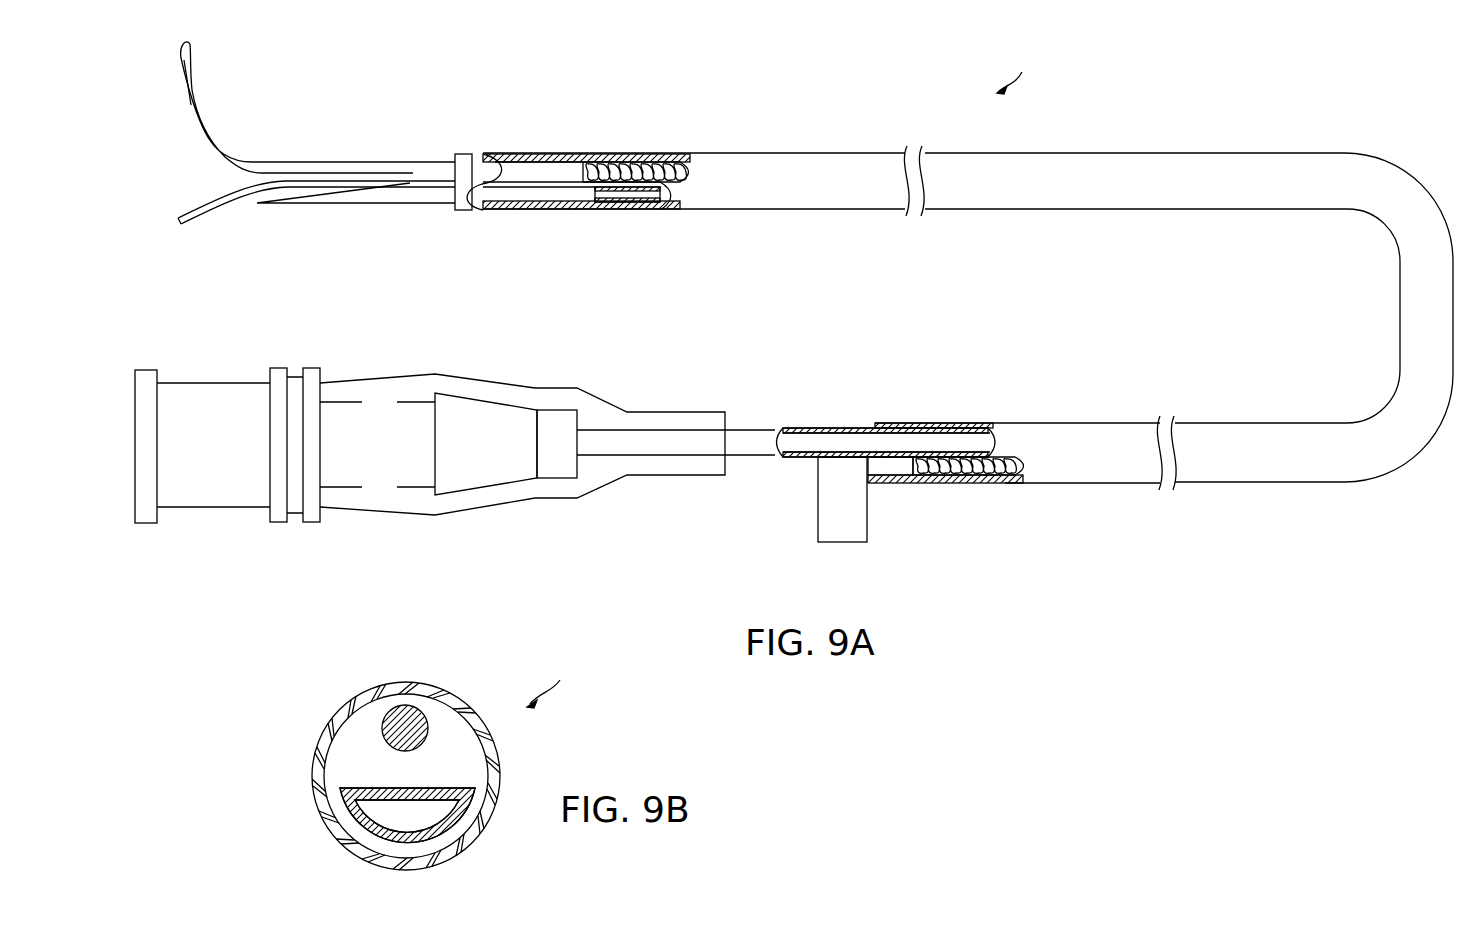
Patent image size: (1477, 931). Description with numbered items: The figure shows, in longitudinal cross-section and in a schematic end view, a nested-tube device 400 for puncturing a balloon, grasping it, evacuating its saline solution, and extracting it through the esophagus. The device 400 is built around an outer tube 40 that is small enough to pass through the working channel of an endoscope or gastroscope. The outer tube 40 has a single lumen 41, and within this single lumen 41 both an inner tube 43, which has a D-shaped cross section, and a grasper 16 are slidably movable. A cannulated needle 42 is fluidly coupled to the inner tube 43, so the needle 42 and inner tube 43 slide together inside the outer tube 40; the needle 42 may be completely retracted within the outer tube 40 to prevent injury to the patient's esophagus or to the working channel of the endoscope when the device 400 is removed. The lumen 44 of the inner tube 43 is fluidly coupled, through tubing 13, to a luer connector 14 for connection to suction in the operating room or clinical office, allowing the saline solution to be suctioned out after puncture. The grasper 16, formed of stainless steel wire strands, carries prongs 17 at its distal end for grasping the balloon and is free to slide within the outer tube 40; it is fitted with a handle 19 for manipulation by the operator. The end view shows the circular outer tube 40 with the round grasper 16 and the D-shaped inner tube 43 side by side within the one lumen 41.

In FIG. 9A, the tubing 13 is at (600, 488).
In FIG. 9A, the luer connector 14 is at (282, 523).
In FIG. 9A, the grasper 16 is at (340, 162).
In FIG. 9B, the grasper 16 is at (400, 730).
In FIG. 9A, the prongs 17 is at (186, 84).
In FIG. 9A, the handle 19 is at (840, 543).
In FIG. 9A, the outer tube 40 is at (830, 153).
In FIG. 9B, the outer tube 40 is at (462, 690).
In FIG. 9A, the lumen 41 is at (648, 162).
In FIG. 9B, the lumen 41 is at (475, 812).
In FIG. 9A, the cannulated needle 42 is at (318, 208).
In FIG. 9A, the inner tube 43 is at (602, 210).
In FIG. 9B, the inner tube 43 is at (350, 795).
In FIG. 9A, the lumen 44 is at (634, 203).
In FIG. 9B, the lumen 44 is at (375, 810).
In FIG. 9A, the device 400 is at (1022, 70).
In FIG. 9B, the device 400 is at (552, 682).